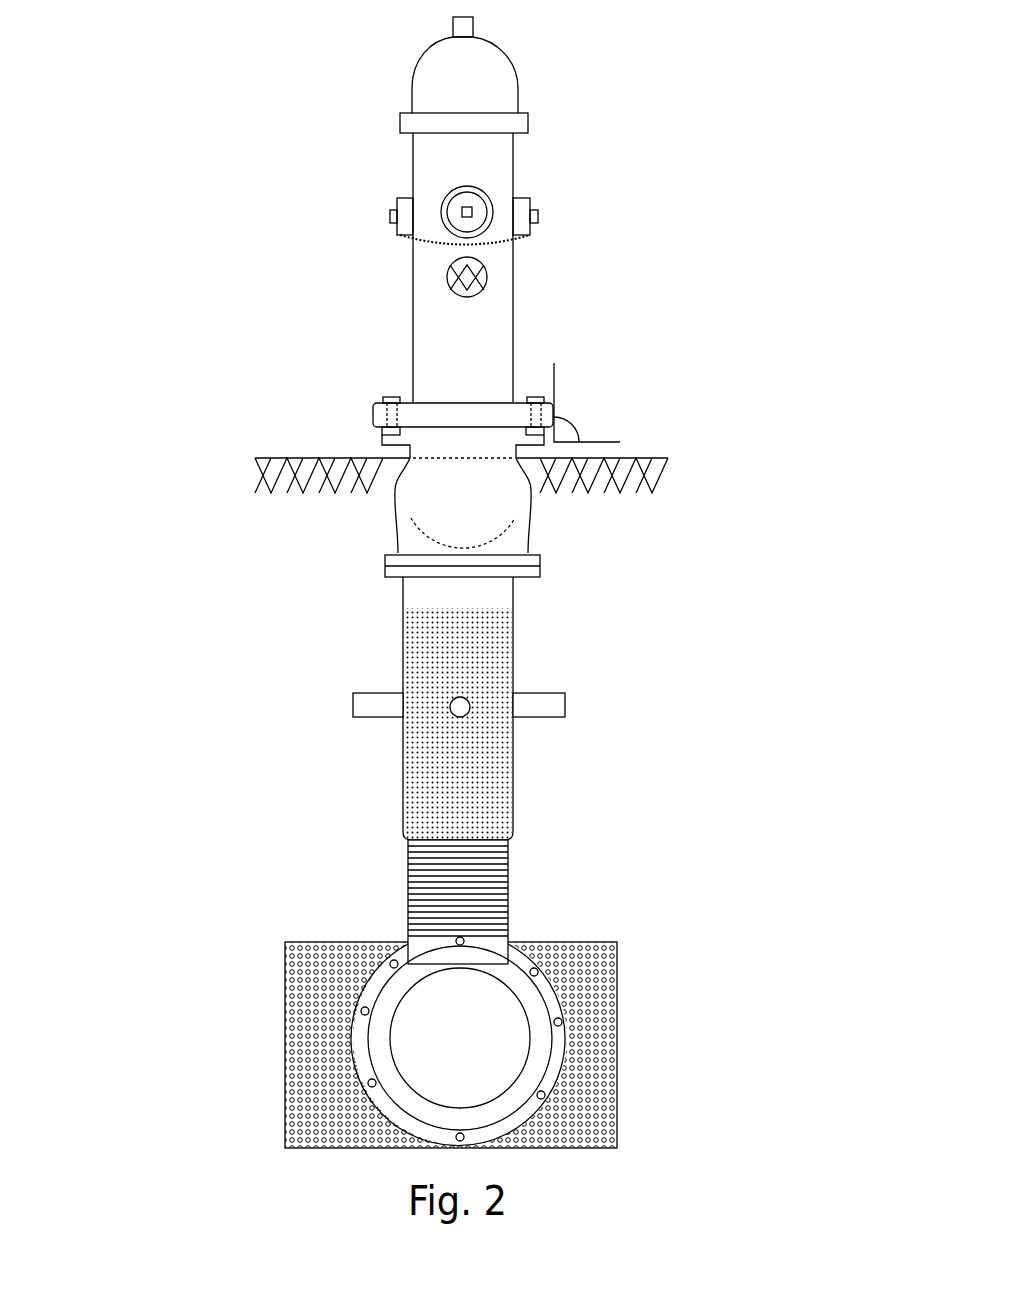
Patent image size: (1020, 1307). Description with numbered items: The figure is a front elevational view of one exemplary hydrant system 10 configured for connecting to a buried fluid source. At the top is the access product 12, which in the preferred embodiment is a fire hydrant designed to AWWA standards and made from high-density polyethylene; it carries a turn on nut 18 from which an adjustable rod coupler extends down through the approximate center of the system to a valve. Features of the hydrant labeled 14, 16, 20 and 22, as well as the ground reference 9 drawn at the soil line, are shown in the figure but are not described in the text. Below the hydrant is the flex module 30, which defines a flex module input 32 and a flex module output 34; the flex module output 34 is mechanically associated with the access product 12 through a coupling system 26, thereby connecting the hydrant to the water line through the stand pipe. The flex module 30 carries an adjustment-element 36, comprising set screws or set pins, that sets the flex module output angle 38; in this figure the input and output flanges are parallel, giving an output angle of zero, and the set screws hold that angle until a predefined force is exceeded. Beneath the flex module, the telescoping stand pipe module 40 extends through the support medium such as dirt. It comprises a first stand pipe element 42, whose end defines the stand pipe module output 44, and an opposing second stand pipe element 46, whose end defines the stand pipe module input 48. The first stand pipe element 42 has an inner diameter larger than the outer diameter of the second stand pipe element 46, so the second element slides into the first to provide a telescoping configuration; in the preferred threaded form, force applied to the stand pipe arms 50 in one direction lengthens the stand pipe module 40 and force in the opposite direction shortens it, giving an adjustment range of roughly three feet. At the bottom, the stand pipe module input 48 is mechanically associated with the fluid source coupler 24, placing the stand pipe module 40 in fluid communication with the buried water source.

The hydrant system 10 is at (182, 95).
The access product 12 is at (525, 170).
The hydrant barrel 14 is at (508, 325).
The bonnet 16 is at (485, 95).
The turn on nut 18 is at (448, 40).
The nozzles 20 is at (390, 215).
The hydrant flange 22 is at (464, 416).
The fluid source coupler 24 is at (532, 1001).
The coupling system 26 is at (385, 412).
The flex module 30 is at (386, 513).
The flex module input 32 is at (385, 560).
The flex module output 34 is at (380, 440).
The adjustment-element 36 is at (378, 497).
The flex module output angle 38 is at (588, 416).
The ground 9 is at (660, 458).
The telescoping stand pipe module 40 is at (519, 773).
The first stand pipe element 42 is at (405, 782).
The stand pipe module output 44 is at (525, 586).
The second stand pipe element 46 is at (408, 888).
The stand pipe module input 48 is at (519, 937).
The stand pipe arms 50 is at (373, 710).